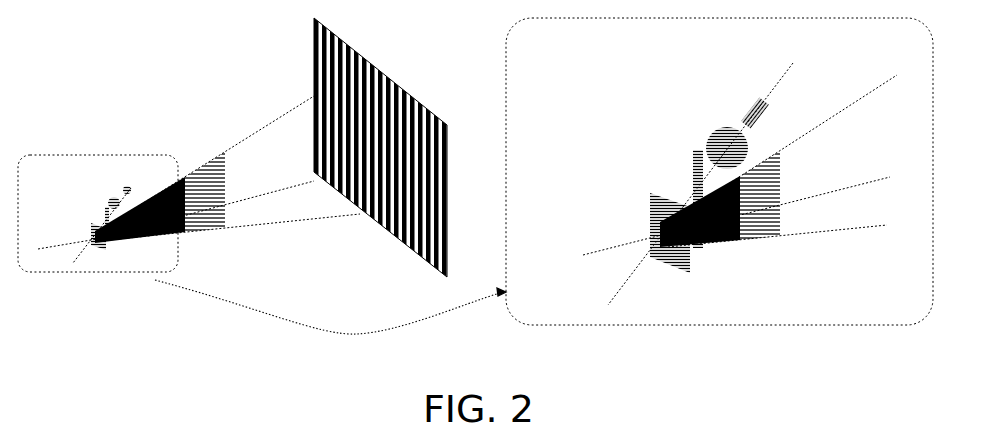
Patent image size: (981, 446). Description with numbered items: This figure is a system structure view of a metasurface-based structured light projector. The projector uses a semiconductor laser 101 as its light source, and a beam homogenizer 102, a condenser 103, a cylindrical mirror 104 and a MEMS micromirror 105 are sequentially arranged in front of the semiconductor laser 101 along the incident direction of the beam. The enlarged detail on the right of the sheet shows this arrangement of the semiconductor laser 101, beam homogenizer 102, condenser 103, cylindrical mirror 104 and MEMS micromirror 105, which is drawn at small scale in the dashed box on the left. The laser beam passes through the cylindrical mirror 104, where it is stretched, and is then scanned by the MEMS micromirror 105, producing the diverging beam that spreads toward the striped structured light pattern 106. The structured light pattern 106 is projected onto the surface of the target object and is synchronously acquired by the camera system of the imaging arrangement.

The semiconductor laser 101 is at (108, 178).
The beam homogenizer 102 is at (716, 126).
The condenser 103 is at (693, 140).
The cylindrical mirror 104 is at (49, 226).
The MEMS micromirror 105 is at (106, 243).
The structured light pattern 106 is at (365, 150).